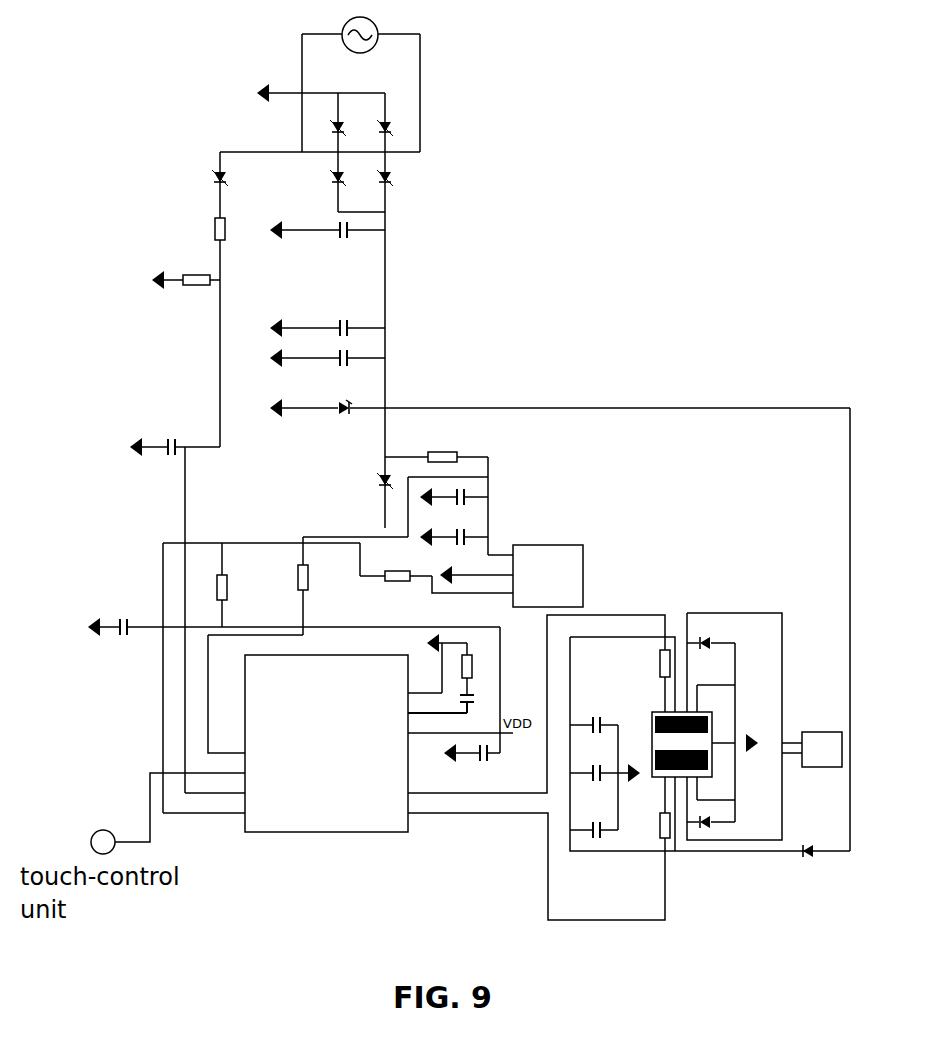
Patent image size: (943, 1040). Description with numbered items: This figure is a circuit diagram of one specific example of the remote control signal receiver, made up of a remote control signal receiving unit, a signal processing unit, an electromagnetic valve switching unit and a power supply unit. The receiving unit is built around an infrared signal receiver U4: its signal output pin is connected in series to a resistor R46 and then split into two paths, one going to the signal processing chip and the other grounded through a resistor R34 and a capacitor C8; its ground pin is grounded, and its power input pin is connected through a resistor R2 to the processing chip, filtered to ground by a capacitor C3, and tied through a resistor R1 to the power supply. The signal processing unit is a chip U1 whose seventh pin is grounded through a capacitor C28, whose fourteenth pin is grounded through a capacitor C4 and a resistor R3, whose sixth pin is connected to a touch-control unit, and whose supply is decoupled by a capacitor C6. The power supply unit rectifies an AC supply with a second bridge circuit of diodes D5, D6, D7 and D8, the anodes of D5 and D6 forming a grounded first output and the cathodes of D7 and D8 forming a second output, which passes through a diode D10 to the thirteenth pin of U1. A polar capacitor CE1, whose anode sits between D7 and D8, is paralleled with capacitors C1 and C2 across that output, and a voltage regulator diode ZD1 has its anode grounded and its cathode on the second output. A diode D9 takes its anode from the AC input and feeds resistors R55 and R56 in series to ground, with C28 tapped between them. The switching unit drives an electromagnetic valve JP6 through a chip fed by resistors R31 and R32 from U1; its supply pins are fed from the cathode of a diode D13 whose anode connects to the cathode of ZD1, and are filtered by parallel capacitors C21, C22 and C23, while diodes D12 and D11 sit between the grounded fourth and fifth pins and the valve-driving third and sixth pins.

The diode D5 is at (392, 122).
The diode D6 is at (325, 122).
The diode D7 is at (394, 182).
The diode D8 is at (324, 182).
The diode D9 is at (229, 185).
The diode D10 is at (362, 482).
The diode D11 is at (713, 638).
The diode D12 is at (713, 829).
The diode D13 is at (804, 862).
The resistor R1 is at (436, 448).
The resistor R2 is at (314, 586).
The resistor R3 is at (477, 669).
The resistor R31 is at (647, 807).
The resistor R32 is at (645, 681).
The resistor R34 is at (237, 585).
The resistor R46 is at (436, 587).
The resistor R55 is at (234, 229).
The resistor R56 is at (186, 275).
The capacitor C1 is at (327, 324).
The capacitor C2 is at (327, 354).
The capacitor C3 is at (454, 545).
The capacitor C4 is at (448, 710).
The capacitor C6 is at (472, 761).
The capacitor C8 is at (294, 618).
The capacitor C21 is at (594, 716).
The capacitor C22 is at (605, 765).
The capacitor C23 is at (454, 505).
The capacitor C28 is at (175, 443).
The polar capacitor CE1 is at (327, 238).
The voltage regulator diode ZD1 is at (560, 404).
The chip U1 is at (328, 750).
The infrared signal receiver U4 is at (540, 570).
The electromagnetic valve JP6 is at (812, 761).